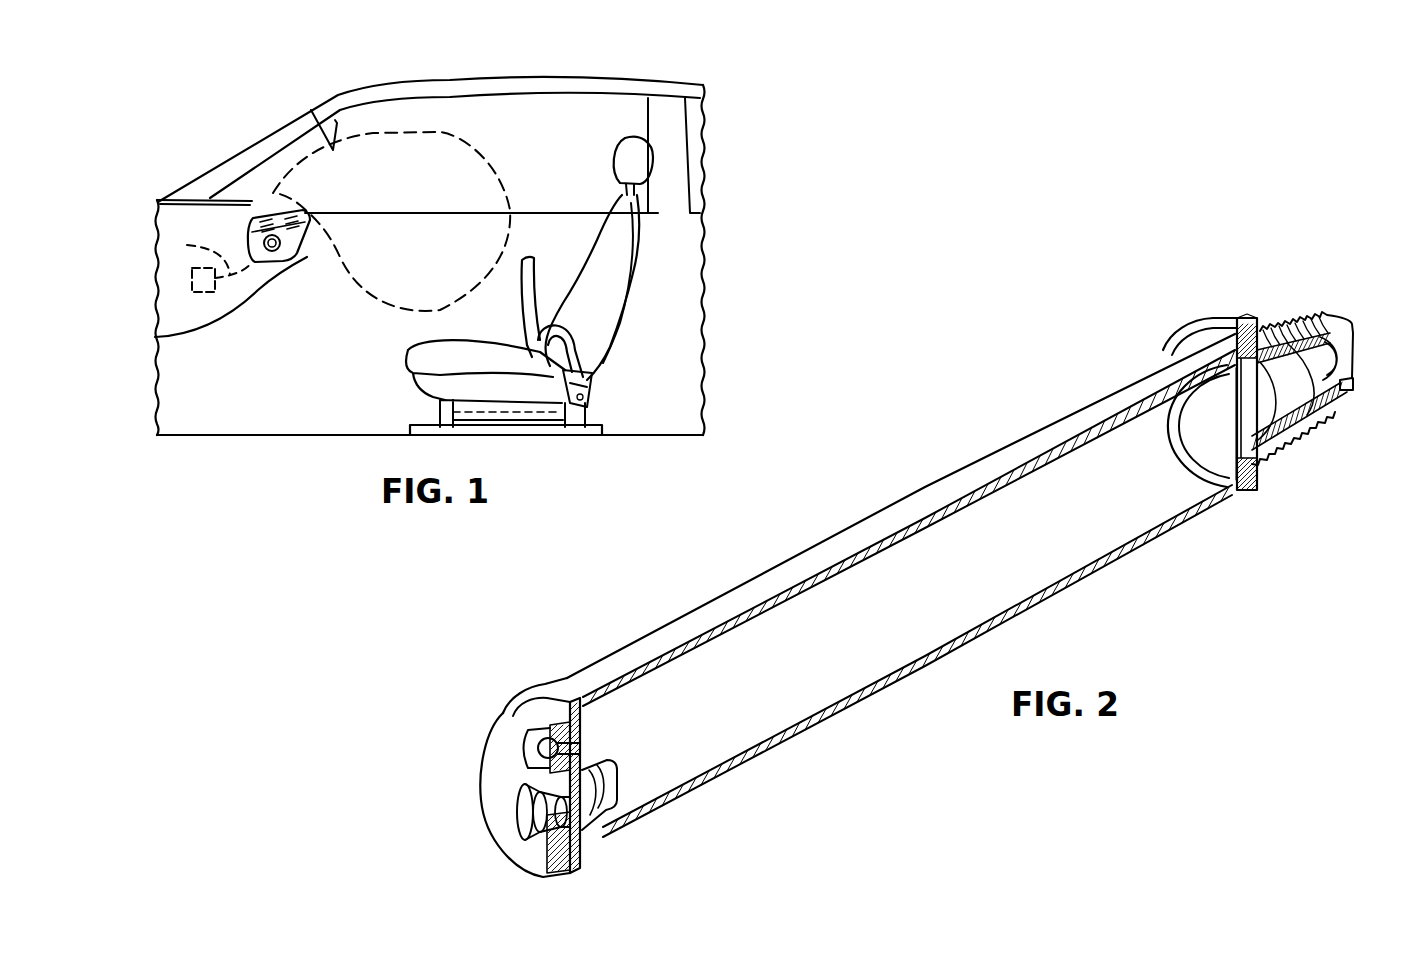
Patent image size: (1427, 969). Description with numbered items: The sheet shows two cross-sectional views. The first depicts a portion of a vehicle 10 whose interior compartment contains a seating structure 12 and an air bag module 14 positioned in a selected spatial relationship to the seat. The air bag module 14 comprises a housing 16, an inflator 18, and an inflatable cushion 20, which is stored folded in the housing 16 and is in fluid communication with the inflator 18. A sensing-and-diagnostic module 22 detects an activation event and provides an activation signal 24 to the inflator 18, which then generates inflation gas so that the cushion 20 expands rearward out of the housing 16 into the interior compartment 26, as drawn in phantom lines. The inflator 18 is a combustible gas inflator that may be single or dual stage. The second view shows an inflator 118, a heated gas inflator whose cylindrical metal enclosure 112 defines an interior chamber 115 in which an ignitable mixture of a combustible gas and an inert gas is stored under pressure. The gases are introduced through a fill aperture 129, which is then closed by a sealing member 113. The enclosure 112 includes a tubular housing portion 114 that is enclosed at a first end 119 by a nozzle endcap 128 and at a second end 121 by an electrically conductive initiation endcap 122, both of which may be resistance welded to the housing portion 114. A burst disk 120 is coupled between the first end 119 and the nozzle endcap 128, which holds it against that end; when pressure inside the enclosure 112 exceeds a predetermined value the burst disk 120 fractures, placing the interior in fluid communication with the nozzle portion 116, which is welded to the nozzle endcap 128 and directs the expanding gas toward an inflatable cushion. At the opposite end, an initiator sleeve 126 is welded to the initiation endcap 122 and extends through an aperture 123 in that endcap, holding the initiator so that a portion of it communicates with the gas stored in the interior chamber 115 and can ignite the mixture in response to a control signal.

In FIG. 1, the vehicle 10 is at (727, 119).
In FIG. 1, the seating structure 12 is at (630, 283).
In FIG. 1, the air bag module 14 is at (298, 252).
In FIG. 1, the housing 16 is at (250, 236).
In FIG. 1, the inflator 18 is at (263, 262).
In FIG. 1, the inflatable cushion 20 is at (255, 217).
In FIG. 1, the sensing-and-diagnostic module 22 is at (192, 285).
In FIG. 1, the activation signal 24 is at (187, 245).
In FIG. 1, the interior compartment 26 is at (543, 128).
In FIG. 2, the cylindrical metal enclosure 112 is at (802, 556).
In FIG. 2, the sealing member 113 is at (545, 750).
In FIG. 2, the housing portion 114 is at (884, 683).
In FIG. 2, the interior chamber 115 is at (1023, 558).
In FIG. 2, the nozzle portion 116 is at (1316, 422).
In FIG. 2, the inflator 118 is at (982, 418).
In FIG. 2, the first end 119 is at (1238, 500).
In FIG. 2, the burst disk 120 is at (1223, 397).
In FIG. 2, the second end 121 is at (577, 862).
In FIG. 2, the initiation endcap 122 is at (532, 870).
In FIG. 2, the aperture 123 is at (532, 825).
In FIG. 2, the initiator sleeve 126 is at (605, 810).
In FIG. 2, the nozzle endcap 128 is at (1205, 314).
In FIG. 2, the fill aperture 129 is at (573, 740).